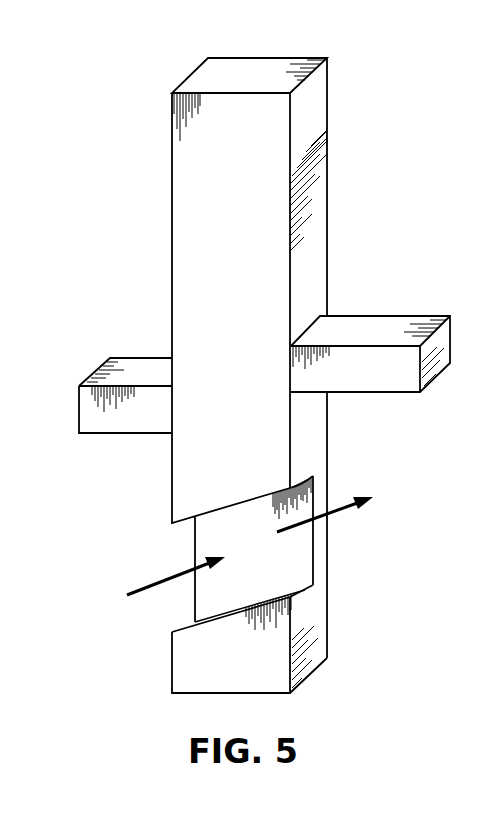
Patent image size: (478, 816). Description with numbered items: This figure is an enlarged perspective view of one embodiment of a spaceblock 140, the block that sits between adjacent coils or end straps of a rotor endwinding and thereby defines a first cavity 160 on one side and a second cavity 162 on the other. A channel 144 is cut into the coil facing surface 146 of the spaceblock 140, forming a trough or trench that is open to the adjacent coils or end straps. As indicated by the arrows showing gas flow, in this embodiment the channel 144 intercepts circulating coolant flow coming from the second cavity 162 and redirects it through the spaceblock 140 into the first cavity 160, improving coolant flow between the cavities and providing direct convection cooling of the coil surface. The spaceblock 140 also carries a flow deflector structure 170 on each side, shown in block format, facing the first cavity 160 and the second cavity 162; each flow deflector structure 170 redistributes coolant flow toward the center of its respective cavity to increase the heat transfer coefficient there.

The spaceblock 140 is at (140, 100).
The channel 144 is at (293, 563).
The coil facing surface 146 is at (253, 303).
The first cavity 160 is at (426, 452).
The second cavity 162 is at (104, 523).
The flow deflector structure 170 is at (133, 372).